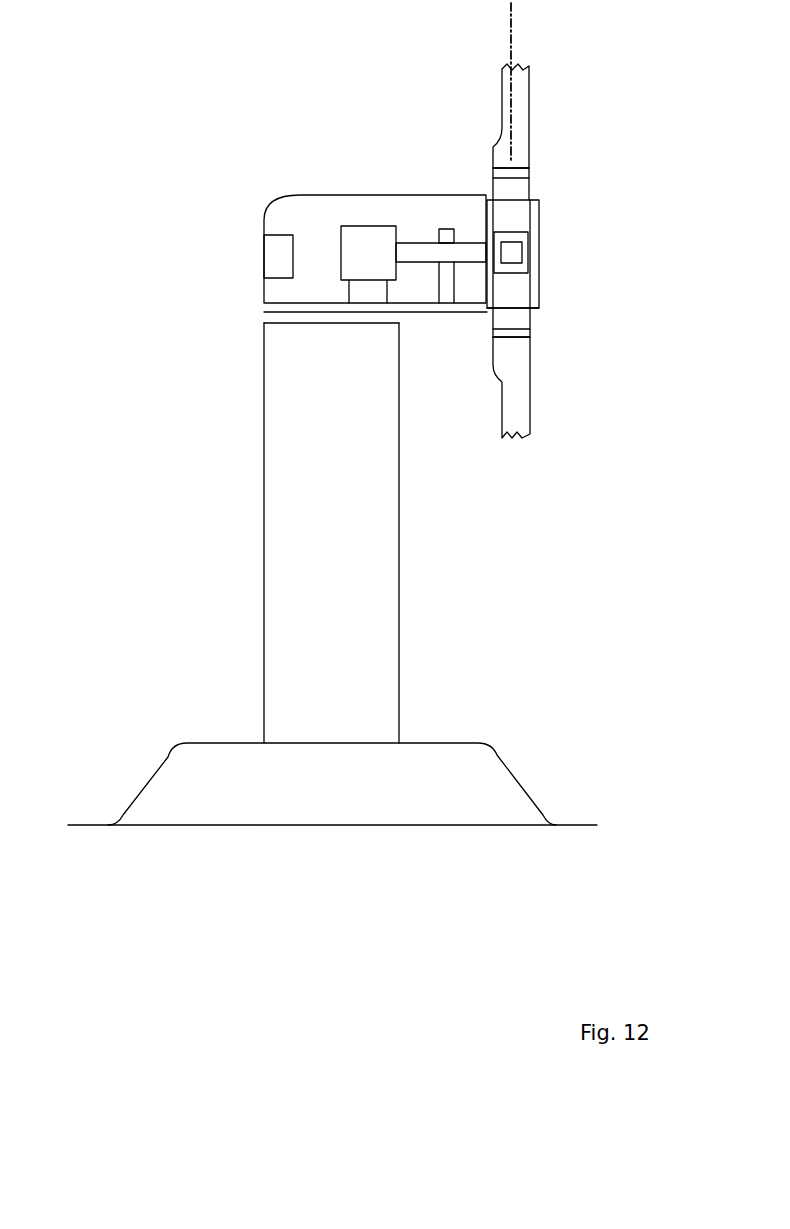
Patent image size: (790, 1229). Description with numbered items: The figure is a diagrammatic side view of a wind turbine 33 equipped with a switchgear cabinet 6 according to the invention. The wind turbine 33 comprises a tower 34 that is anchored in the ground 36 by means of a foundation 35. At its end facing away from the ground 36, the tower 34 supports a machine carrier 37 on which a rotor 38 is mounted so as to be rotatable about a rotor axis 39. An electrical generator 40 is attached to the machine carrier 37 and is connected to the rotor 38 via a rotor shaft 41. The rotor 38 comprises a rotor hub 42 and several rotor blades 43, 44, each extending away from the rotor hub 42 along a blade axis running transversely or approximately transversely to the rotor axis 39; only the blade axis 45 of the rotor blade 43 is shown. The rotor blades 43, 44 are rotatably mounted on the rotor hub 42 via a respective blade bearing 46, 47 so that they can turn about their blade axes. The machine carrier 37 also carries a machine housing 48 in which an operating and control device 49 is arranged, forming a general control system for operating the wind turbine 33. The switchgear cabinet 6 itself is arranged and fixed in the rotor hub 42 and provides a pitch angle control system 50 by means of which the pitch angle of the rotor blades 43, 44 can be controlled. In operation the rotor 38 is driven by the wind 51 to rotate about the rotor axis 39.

The wind turbine 33 is at (226, 116).
The tower 34 is at (264, 505).
The foundation 35 is at (172, 750).
The ground 36 is at (87, 823).
The machine carrier 37 is at (280, 303).
The rotor 38 is at (560, 194).
The rotor axis 39 is at (540, 253).
The electrical generator 40 is at (368, 226).
The rotor shaft 41 is at (413, 243).
The rotor hub 42 is at (533, 294).
The rotor blade 43 is at (525, 93).
The rotor blade 44 is at (525, 420).
The blade axis 45 is at (513, 22).
The blade bearing 46 is at (492, 173).
The blade bearing 47 is at (493, 334).
The machine housing 48 is at (331, 195).
The operating and control device 49 is at (278, 234).
The pitch angle control system 50 is at (514, 262).
The wind 51 is at (638, 198).
The switchgear cabinet 6 is at (522, 232).